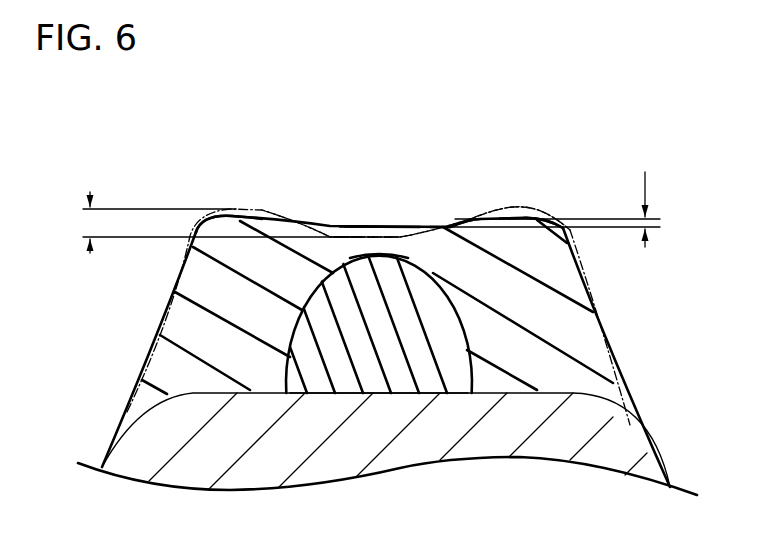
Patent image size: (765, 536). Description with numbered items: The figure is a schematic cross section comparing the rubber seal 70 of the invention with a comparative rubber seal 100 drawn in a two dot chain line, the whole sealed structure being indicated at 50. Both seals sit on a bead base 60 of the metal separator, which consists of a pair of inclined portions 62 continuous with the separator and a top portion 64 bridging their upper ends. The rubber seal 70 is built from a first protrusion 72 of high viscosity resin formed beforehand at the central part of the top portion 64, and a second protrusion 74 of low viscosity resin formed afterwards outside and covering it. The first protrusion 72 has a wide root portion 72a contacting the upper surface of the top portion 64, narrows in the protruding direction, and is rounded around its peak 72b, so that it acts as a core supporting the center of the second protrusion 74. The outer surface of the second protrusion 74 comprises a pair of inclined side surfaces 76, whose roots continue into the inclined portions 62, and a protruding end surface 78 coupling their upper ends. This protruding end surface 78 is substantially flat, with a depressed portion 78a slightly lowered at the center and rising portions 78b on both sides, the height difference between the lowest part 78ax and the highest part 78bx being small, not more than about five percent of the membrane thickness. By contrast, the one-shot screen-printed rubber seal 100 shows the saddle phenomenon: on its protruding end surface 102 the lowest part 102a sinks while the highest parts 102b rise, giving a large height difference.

The semiconductor device / structure 50 is at (246, 101).
The bead base 60 is at (113, 440).
The inclined portions 62 is at (630, 447).
The top portion 64 is at (435, 441).
The rubber seal 70 is at (145, 283).
The first protrusion 72 is at (456, 344).
The root portion 72a is at (388, 394).
The peak 72b is at (388, 250).
The second protrusion 74 is at (185, 316).
The inclined side surfaces 76 is at (150, 342).
The protruding end surface 78 is at (384, 187).
The depressed portion 78a is at (448, 227).
The lowest part 78ax is at (379, 228).
The rising portions 78b is at (233, 216).
The highest part 78bx is at (537, 217).
The rubber seal 100 is at (246, 204).
The protruding end surface 102 is at (285, 226).
The lowest part 102a is at (371, 236).
The highest parts 102b is at (524, 206).